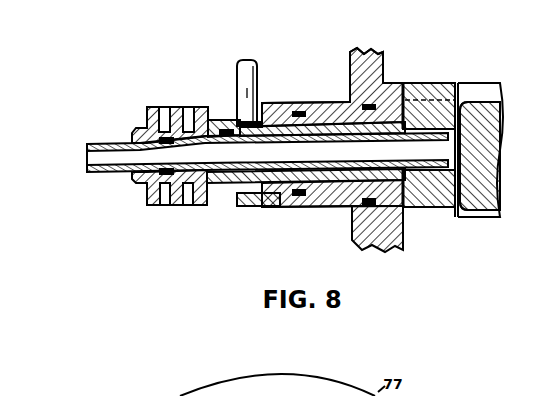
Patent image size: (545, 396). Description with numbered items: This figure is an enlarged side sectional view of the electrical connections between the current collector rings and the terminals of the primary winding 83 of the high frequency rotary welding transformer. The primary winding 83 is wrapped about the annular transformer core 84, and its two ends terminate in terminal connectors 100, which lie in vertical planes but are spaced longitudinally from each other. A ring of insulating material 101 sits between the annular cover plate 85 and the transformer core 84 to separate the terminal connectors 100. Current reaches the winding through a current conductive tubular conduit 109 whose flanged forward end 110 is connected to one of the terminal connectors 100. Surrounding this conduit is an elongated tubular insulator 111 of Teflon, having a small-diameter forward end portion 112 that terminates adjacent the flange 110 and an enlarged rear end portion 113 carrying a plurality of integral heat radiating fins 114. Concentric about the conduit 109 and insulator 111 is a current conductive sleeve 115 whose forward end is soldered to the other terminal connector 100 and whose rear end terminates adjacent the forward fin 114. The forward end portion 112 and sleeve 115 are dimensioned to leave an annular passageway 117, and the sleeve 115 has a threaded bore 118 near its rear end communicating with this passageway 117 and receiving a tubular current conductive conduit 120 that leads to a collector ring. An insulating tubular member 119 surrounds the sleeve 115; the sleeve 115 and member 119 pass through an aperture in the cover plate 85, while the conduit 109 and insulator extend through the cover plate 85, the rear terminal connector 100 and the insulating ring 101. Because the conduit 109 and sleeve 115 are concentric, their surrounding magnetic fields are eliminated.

The current conductive tubular conduit 109 is at (100, 157).
The heat radiating fins 114 is at (157, 107).
The rear end portion 113 is at (188, 138).
The tubular insulator 111 is at (212, 122).
The tubular current conductive conduit 120 is at (240, 80).
The forward end portion 112 is at (322, 114).
The annular cover plate 85 is at (372, 60).
The current conductive sleeve 115 is at (280, 126).
The annular passageway 117 is at (338, 102).
The tubular member of insulating material 119 is at (303, 100).
The threaded bore 118 is at (265, 105).
The terminal connectors 100 is at (407, 97).
The ring of insulating material 101 is at (443, 83).
The annular transformer core 84 is at (493, 153).
The primary winding 83 is at (470, 106).
The flanged forward end 110 is at (467, 175).